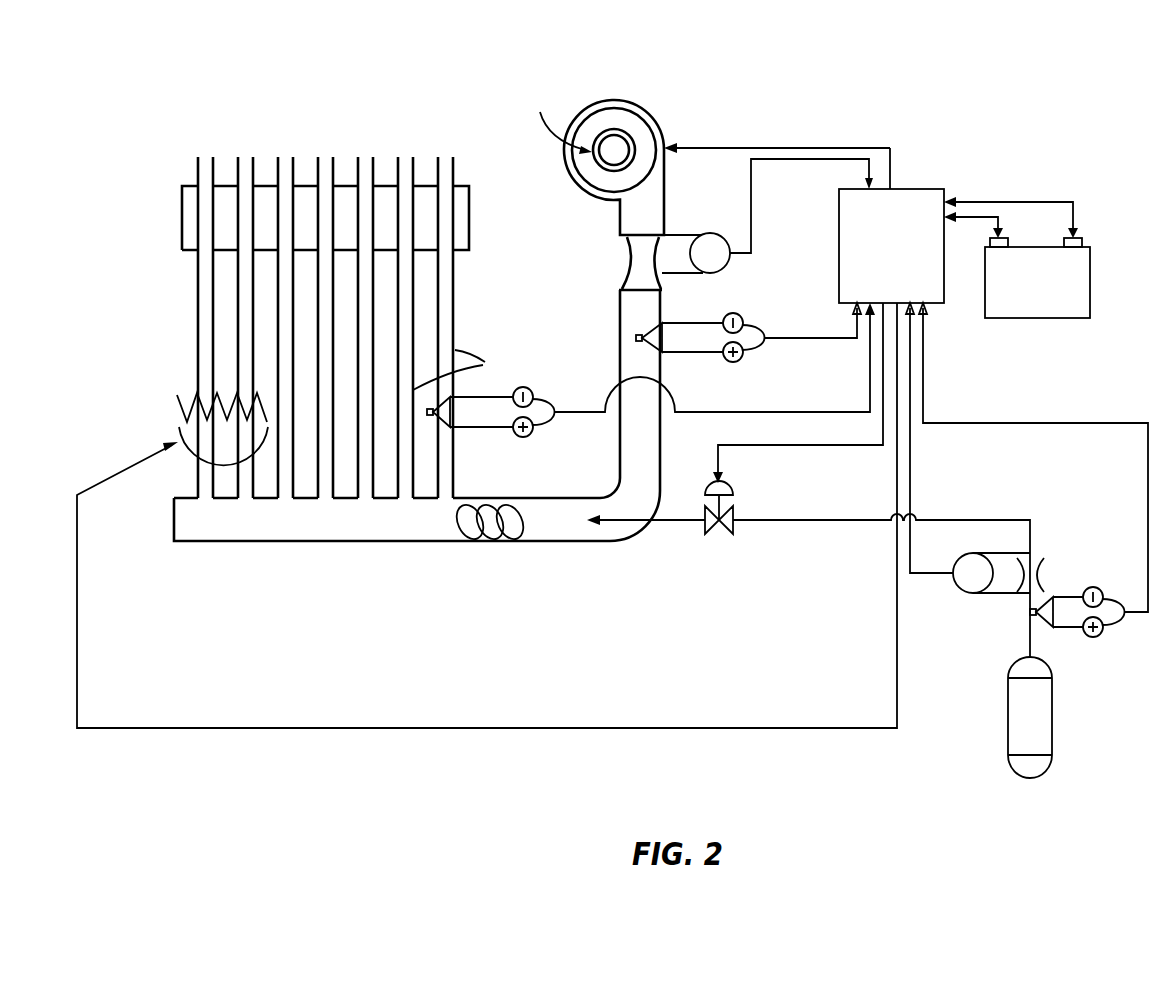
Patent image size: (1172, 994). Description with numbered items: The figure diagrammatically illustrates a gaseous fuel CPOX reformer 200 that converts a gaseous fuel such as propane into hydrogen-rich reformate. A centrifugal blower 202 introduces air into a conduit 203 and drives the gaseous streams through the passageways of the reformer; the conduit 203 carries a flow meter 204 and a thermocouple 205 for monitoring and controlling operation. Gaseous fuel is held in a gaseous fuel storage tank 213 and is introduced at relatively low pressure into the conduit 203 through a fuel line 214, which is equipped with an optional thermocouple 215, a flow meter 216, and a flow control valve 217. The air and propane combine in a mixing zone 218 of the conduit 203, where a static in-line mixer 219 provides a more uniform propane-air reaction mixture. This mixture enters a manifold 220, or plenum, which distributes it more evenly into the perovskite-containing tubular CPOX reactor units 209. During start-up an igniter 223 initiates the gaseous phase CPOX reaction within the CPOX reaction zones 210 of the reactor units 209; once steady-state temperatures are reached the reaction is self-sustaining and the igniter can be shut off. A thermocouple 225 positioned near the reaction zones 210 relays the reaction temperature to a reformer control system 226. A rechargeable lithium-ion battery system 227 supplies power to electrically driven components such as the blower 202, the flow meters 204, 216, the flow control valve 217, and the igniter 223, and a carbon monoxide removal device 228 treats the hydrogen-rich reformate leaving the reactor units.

The gaseous fuel CPOX reformer 200 is at (995, 44).
The centrifugal blower 202 is at (655, 115).
The conduit 203 is at (620, 345).
The flow meter 204 is at (731, 262).
The thermocouple 205 is at (713, 322).
The tubular CPOX reactor units 209 is at (467, 370).
The CPOX reaction zones 210 is at (230, 309).
The gaseous fuel storage tank 213 is at (1053, 708).
The fuel line 214 is at (1000, 520).
The thermocouple 215 is at (1070, 597).
The flow meter 216 is at (968, 595).
The flow control valve 217 is at (709, 535).
The mixing zone 218 is at (493, 548).
The in-line mixer 219 is at (473, 540).
The manifold 220 is at (344, 530).
The igniter 223 is at (178, 412).
The thermocouple 225 is at (465, 428).
The reformer control system 226 is at (908, 189).
The rechargeable lithium-ion battery system 227 is at (1090, 268).
The carbon monoxide removal device 228 is at (182, 208).